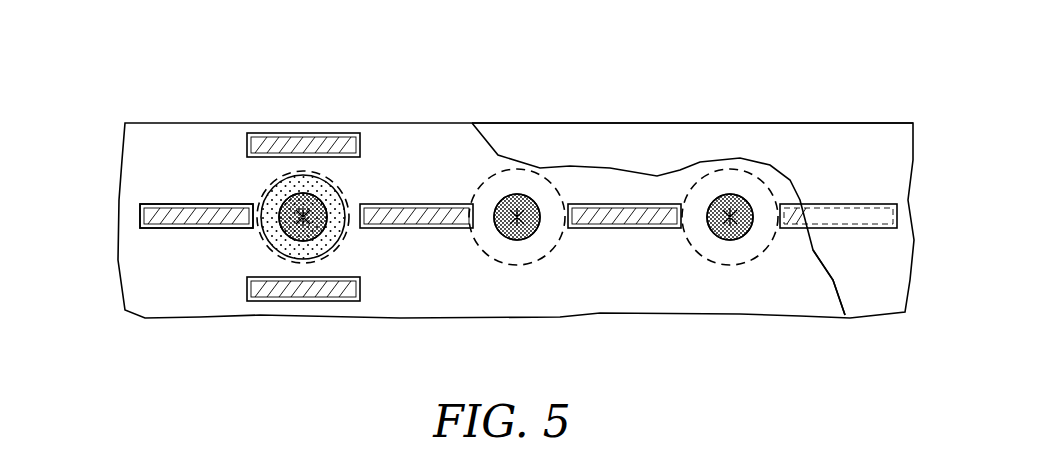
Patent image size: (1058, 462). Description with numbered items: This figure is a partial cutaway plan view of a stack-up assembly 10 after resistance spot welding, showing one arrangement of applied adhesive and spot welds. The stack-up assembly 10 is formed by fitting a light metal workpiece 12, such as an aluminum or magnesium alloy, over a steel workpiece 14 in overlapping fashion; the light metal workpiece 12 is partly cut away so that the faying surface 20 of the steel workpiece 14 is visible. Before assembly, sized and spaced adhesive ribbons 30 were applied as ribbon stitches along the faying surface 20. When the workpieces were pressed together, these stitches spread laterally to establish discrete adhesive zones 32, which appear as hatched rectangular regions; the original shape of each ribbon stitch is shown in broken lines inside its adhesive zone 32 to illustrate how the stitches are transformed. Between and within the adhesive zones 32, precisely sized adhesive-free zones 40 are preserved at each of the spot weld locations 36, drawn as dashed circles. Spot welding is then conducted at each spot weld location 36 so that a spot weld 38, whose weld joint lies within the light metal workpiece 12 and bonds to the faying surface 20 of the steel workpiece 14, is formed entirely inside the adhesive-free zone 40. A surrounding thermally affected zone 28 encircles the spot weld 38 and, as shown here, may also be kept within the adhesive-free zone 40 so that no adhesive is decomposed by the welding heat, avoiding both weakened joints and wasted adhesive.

The stack-up assembly 10 is at (528, 120).
The light metal workpiece 12 is at (845, 150).
The steel workpiece 14 is at (772, 280).
The faying surface 20 is at (167, 162).
The thermally affected zone 28 is at (340, 186).
The adhesive ribbons 30 is at (181, 210).
The adhesive zones 32 is at (262, 133).
The spot weld locations 36 is at (300, 212).
The spot weld 38 is at (310, 225).
The adhesive-free zone 40 is at (266, 250).